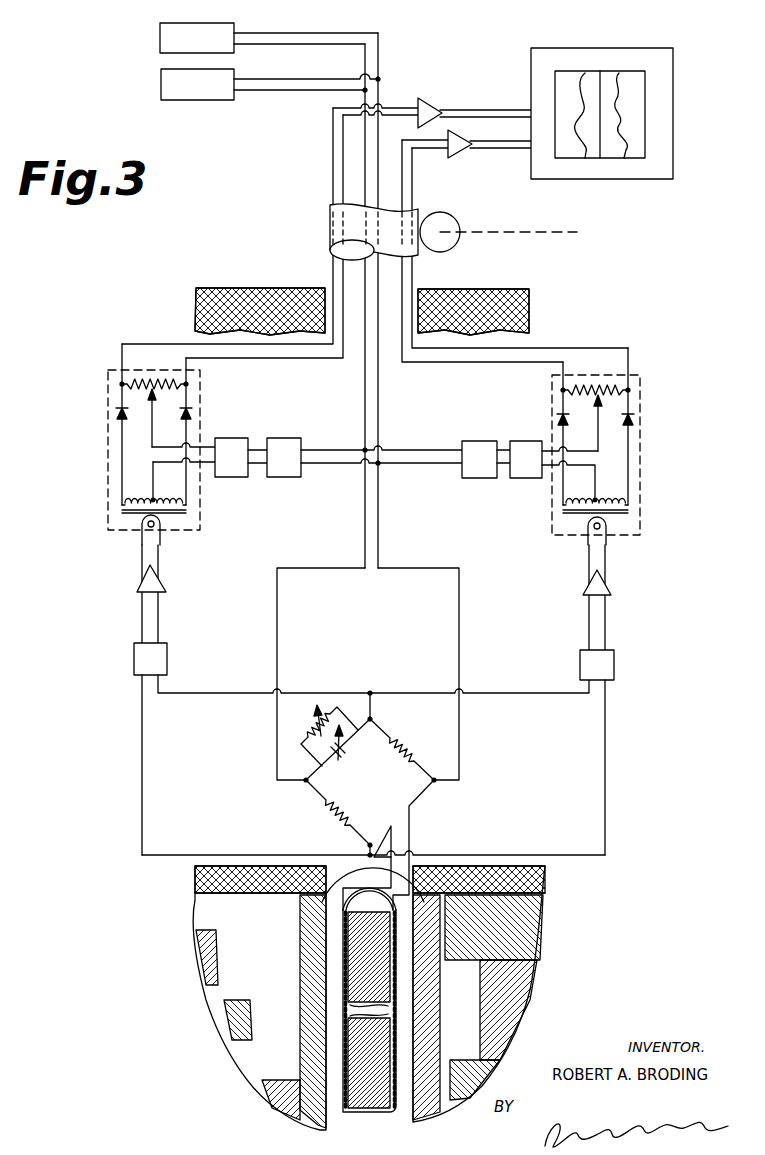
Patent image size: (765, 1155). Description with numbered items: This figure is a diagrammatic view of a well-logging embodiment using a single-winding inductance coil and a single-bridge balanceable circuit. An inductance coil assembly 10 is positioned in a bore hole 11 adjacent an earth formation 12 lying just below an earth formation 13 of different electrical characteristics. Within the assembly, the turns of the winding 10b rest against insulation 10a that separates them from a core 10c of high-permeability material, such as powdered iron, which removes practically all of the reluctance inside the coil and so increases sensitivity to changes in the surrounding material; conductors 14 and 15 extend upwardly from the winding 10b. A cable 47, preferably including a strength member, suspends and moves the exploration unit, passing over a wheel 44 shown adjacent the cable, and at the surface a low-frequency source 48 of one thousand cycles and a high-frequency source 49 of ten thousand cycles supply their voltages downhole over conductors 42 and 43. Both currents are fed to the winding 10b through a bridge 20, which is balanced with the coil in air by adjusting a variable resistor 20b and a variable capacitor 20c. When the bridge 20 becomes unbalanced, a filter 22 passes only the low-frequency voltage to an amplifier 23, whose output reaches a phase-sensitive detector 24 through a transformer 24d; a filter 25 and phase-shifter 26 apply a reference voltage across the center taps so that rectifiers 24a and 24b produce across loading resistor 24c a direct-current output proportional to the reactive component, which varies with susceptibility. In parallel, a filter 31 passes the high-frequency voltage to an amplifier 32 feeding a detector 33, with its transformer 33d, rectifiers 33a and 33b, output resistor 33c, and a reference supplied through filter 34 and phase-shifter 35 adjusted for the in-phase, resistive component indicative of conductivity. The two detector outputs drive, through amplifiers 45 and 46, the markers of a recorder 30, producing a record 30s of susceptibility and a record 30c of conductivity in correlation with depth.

The inductance coil assembly 10 is at (379, 1000).
The insulation 10a is at (398, 950).
The winding 10b is at (398, 990).
The core 10c is at (365, 1043).
The bore hole 11 is at (360, 882).
The earth formation 12 is at (520, 955).
The earth formation 13 is at (530, 883).
The conductor 14 is at (343, 896).
The conductor 15 is at (410, 836).
The bridge 20 is at (368, 713).
The variable resistor 20b is at (311, 733).
The variable capacitor 20c is at (340, 743).
The filter 22 is at (134, 661).
The amplifier 23 is at (137, 584).
The phase-sensitive frequency-selective detector 24 is at (108, 449).
The rectifier 24a is at (117, 409).
The rectifier 24b is at (191, 412).
The loading resistor 24c is at (160, 381).
The transformer 24d is at (125, 516).
The filter 25 is at (285, 438).
The phase-shifter 26 is at (232, 438).
The recorder 30 is at (630, 135).
The record of change of susceptibility 30s is at (584, 153).
The record of change in conductivity 30c is at (622, 158).
The filter 31 is at (614, 664).
The amplifier 32 is at (613, 592).
The detector 33 is at (641, 478).
The rectifier 33a is at (560, 417).
The rectifier 33b is at (636, 418).
The output resistor 33c is at (617, 387).
The transformer 33d is at (630, 518).
The filter 34 is at (470, 441).
The phase-shifter 35 is at (533, 441).
The conductor 42 is at (364, 506).
The conductor 43 is at (381, 541).
The depth measuring wheel 44 is at (460, 216).
The amplifier 45 is at (424, 100).
The amplifier 46 is at (462, 150).
The cable 47 is at (328, 222).
The low-frequency source 48 is at (160, 38).
The high-frequency source 49 is at (161, 92).